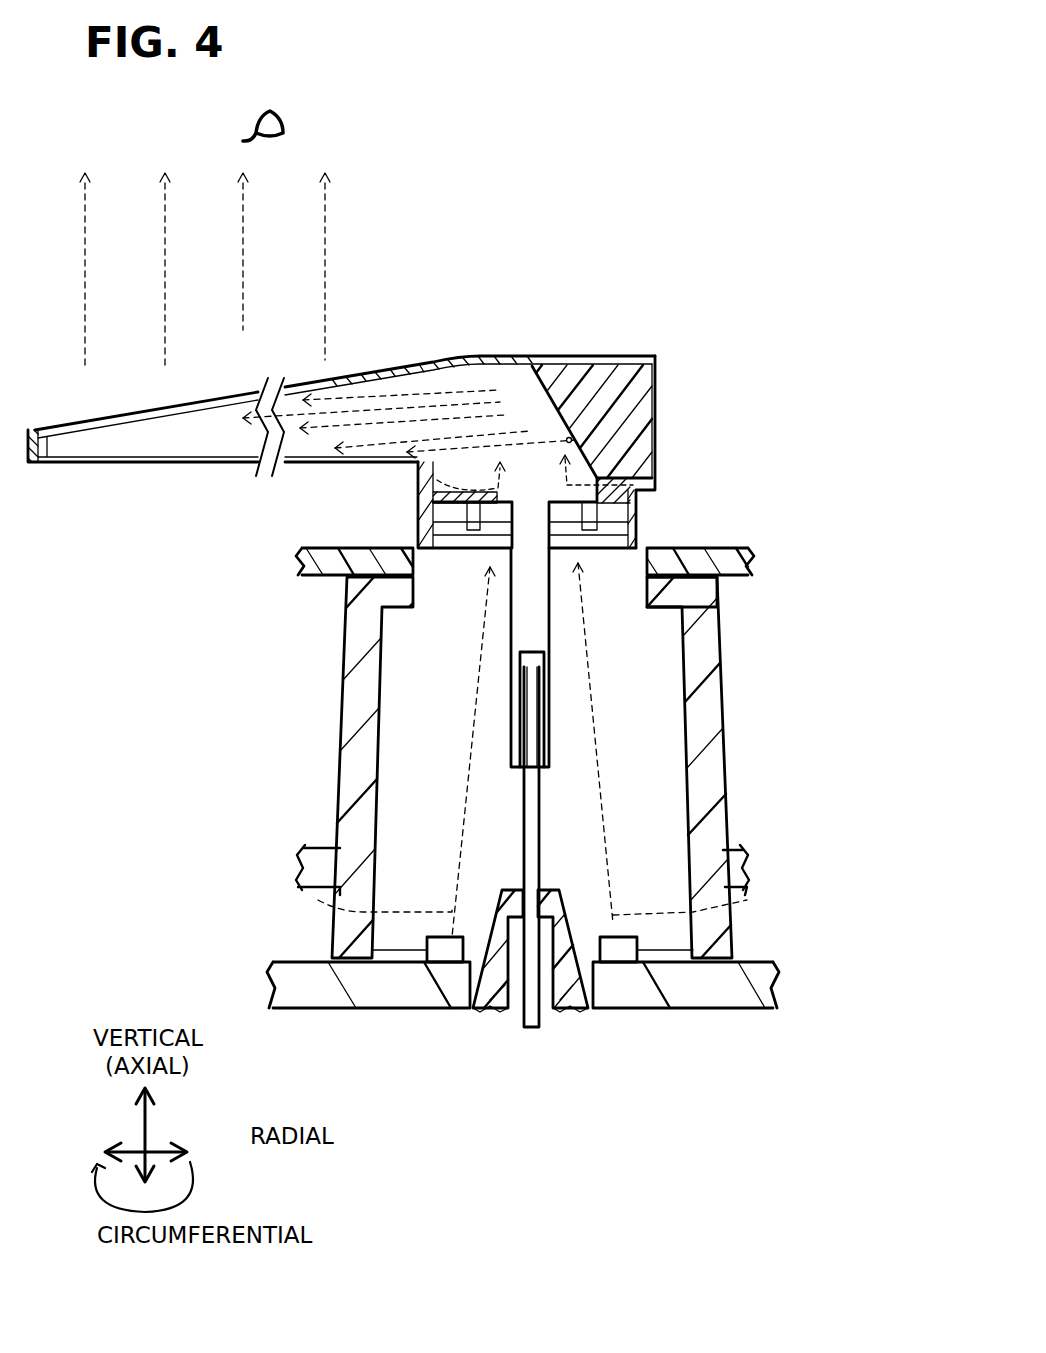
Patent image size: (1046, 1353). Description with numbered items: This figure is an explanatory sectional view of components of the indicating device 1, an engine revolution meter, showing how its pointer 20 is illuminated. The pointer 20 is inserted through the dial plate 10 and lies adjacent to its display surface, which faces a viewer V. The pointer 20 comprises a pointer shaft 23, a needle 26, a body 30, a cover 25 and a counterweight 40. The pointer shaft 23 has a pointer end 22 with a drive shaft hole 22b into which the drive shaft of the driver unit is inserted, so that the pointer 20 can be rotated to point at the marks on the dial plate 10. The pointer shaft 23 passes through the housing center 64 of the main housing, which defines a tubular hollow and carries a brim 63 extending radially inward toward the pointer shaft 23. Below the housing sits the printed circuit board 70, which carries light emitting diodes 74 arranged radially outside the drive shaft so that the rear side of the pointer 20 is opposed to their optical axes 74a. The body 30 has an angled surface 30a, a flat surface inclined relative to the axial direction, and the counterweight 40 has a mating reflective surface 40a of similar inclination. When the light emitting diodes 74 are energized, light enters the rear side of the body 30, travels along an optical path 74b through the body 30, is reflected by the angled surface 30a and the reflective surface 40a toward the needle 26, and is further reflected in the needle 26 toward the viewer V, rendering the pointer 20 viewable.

The indicating device 1 is at (832, 456).
The dial plate 10 is at (718, 556).
The pointer 20 is at (535, 334).
The pointer end 22 is at (523, 785).
The drive shaft hole 22b is at (546, 720).
The pointer shaft 23 is at (548, 582).
The cover 25 is at (530, 355).
The needle 26 is at (224, 460).
The body 30 is at (585, 435).
The angled surface 30a is at (569, 440).
The counterweight 40 is at (648, 362).
The reflective surface 40a is at (640, 422).
The brim 63 is at (662, 605).
The housing center 64 is at (705, 650).
The printed circuit board 70 is at (748, 972).
The light emitting diodes 74 is at (372, 948).
The optical axes 74a is at (531, 750).
The optical path 74b is at (415, 479).
The viewer V is at (283, 122).